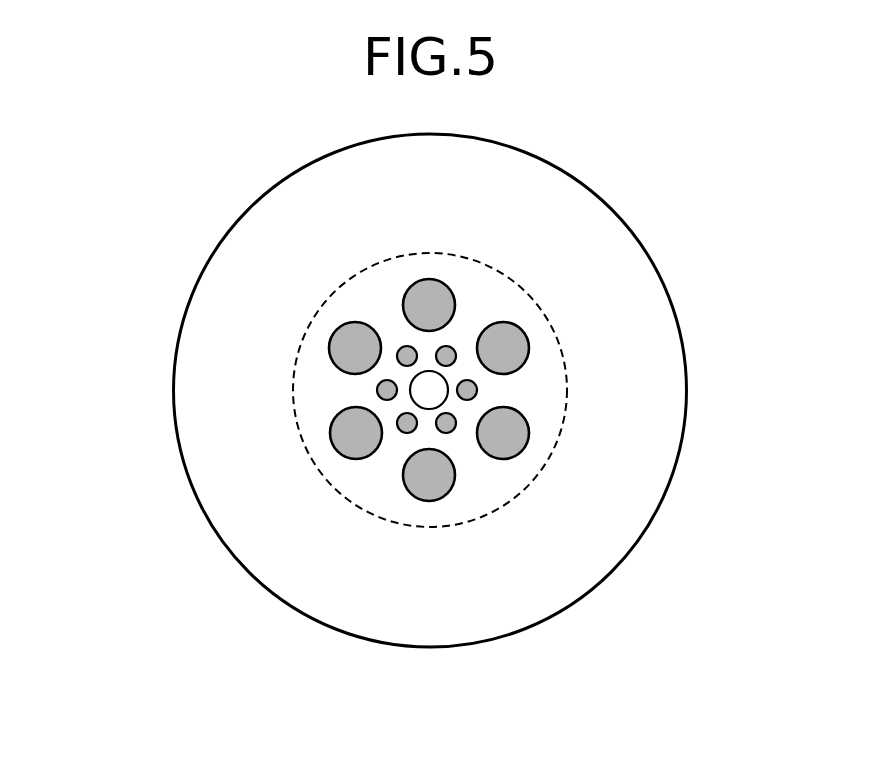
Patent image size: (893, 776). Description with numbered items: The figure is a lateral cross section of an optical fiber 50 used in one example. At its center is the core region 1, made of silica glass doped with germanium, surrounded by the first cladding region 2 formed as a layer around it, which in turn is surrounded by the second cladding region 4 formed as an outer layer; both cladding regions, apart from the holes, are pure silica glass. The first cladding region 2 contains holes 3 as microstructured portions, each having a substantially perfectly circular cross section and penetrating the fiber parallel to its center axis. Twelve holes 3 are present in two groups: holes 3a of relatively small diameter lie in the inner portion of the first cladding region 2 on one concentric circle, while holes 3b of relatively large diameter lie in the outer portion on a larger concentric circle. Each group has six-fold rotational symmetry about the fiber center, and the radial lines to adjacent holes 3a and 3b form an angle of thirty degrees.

The optical fiber 50 is at (414, 378).
The second cladding region 4 is at (600, 477).
The first cladding region 2 is at (542, 390).
The core region 1 is at (431, 390).
The holes 3 is at (318, 364).
The holes having relatively small cross-sectional area 3a is at (390, 390).
The holes having relatively large cross-sectional area 3b is at (356, 433).